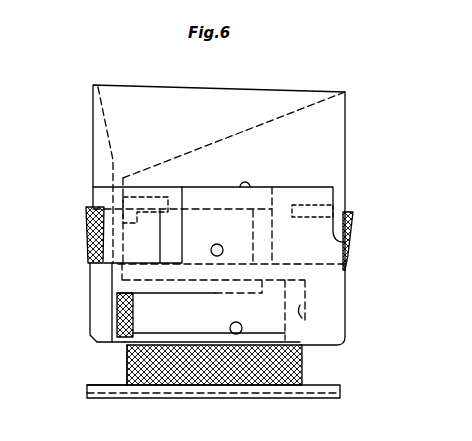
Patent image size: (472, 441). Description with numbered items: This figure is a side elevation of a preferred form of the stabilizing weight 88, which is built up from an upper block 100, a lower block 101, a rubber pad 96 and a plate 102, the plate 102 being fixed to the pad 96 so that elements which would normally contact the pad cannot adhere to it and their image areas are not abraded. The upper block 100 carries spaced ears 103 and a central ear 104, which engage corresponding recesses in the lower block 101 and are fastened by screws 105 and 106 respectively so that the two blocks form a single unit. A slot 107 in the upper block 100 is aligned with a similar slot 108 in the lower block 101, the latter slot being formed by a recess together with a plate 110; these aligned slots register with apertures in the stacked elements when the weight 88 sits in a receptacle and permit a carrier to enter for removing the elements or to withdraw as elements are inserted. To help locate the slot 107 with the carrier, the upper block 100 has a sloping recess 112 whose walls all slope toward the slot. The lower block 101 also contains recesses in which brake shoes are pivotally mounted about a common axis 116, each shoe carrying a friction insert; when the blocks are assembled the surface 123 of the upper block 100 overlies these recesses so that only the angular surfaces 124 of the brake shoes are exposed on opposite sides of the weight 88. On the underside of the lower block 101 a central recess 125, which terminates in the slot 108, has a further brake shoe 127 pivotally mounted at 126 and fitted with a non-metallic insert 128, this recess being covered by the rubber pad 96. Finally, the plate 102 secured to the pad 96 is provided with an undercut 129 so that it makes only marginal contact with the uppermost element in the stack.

The stabilizing weight 88 is at (347, 166).
The rubber pad 96 is at (247, 381).
The upper block 100 is at (93, 135).
The lower block 101 is at (90, 295).
The plate 102 is at (146, 389).
The spaced ears 103 is at (348, 246).
The central ear 104 is at (93, 190).
The screws 105 is at (345, 203).
The screws 106 is at (130, 213).
The slot 107 is at (113, 162).
The slot 108 is at (88, 262).
The plate 110 is at (100, 315).
The sloping recess 112 is at (264, 118).
The common axis 116 is at (226, 241).
The surface 123 is at (250, 187).
The angular surfaces 124 is at (86, 212).
The central recess 125 is at (305, 316).
The pivot 126 is at (235, 322).
The brake shoe 127 is at (122, 350).
The non-metallic insert 128 is at (93, 338).
The undercut 129 is at (308, 398).